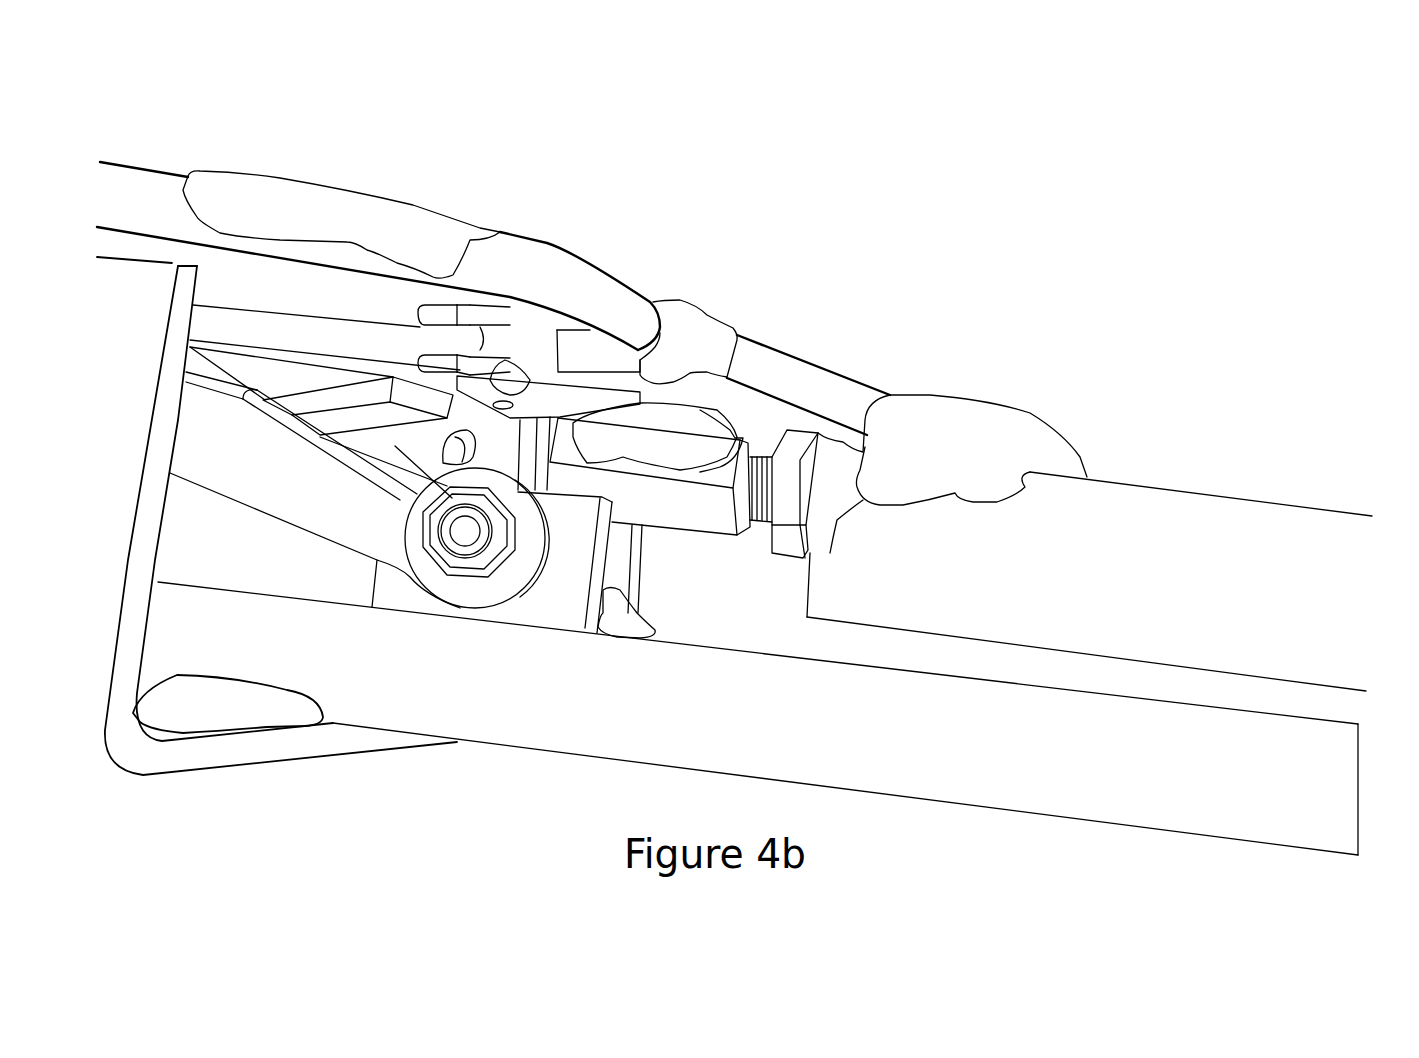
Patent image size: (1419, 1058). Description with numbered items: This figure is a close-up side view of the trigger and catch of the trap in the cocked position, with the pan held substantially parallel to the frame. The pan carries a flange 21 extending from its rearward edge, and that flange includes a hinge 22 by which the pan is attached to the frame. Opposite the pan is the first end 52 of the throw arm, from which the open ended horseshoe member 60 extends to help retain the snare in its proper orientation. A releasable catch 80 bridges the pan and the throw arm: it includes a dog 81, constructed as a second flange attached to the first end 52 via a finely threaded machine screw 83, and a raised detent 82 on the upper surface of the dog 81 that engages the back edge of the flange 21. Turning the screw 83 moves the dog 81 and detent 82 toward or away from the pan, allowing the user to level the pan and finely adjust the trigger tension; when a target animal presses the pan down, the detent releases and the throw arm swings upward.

The flange 21 is at (375, 395).
The hinge 22 is at (503, 742).
The first end 52 is at (1196, 500).
The horseshoe member 60 is at (752, 352).
The releasable catch 80 is at (772, 423).
The dog 81 is at (553, 398).
The raised detent 82 is at (508, 373).
The finely threaded machine screw 83 is at (758, 528).